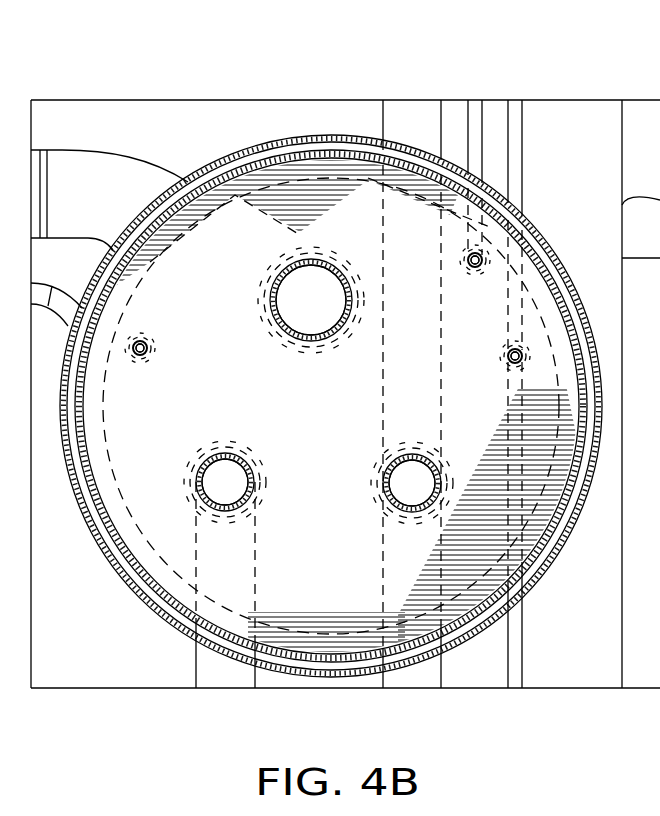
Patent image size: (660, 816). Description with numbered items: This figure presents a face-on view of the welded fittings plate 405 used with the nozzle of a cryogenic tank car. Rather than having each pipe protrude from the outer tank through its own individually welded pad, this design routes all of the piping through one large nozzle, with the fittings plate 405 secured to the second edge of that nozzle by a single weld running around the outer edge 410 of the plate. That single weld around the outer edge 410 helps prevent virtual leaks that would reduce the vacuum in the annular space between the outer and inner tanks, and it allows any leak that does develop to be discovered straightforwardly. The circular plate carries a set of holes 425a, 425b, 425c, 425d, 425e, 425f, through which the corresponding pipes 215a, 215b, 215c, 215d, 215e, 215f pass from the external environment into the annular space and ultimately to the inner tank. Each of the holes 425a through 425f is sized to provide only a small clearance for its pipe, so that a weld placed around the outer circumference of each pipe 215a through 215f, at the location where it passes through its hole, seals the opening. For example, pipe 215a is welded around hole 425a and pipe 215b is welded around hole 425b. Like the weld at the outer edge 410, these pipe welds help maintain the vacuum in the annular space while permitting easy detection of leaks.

The outer edge 410 is at (248, 165).
The fittings plate 405 is at (322, 200).
The pipe 215a is at (312, 308).
The pipe 215b is at (248, 490).
The pipe 215c is at (437, 496).
The pipe 215d is at (145, 355).
The pipe 215e is at (476, 255).
The pipe 215f is at (520, 348).
The hole 425a is at (278, 284).
The hole 425b is at (198, 498).
The hole 425c is at (388, 482).
The hole 425d is at (146, 348).
The hole 425e is at (472, 268).
The hole 425f is at (509, 363).